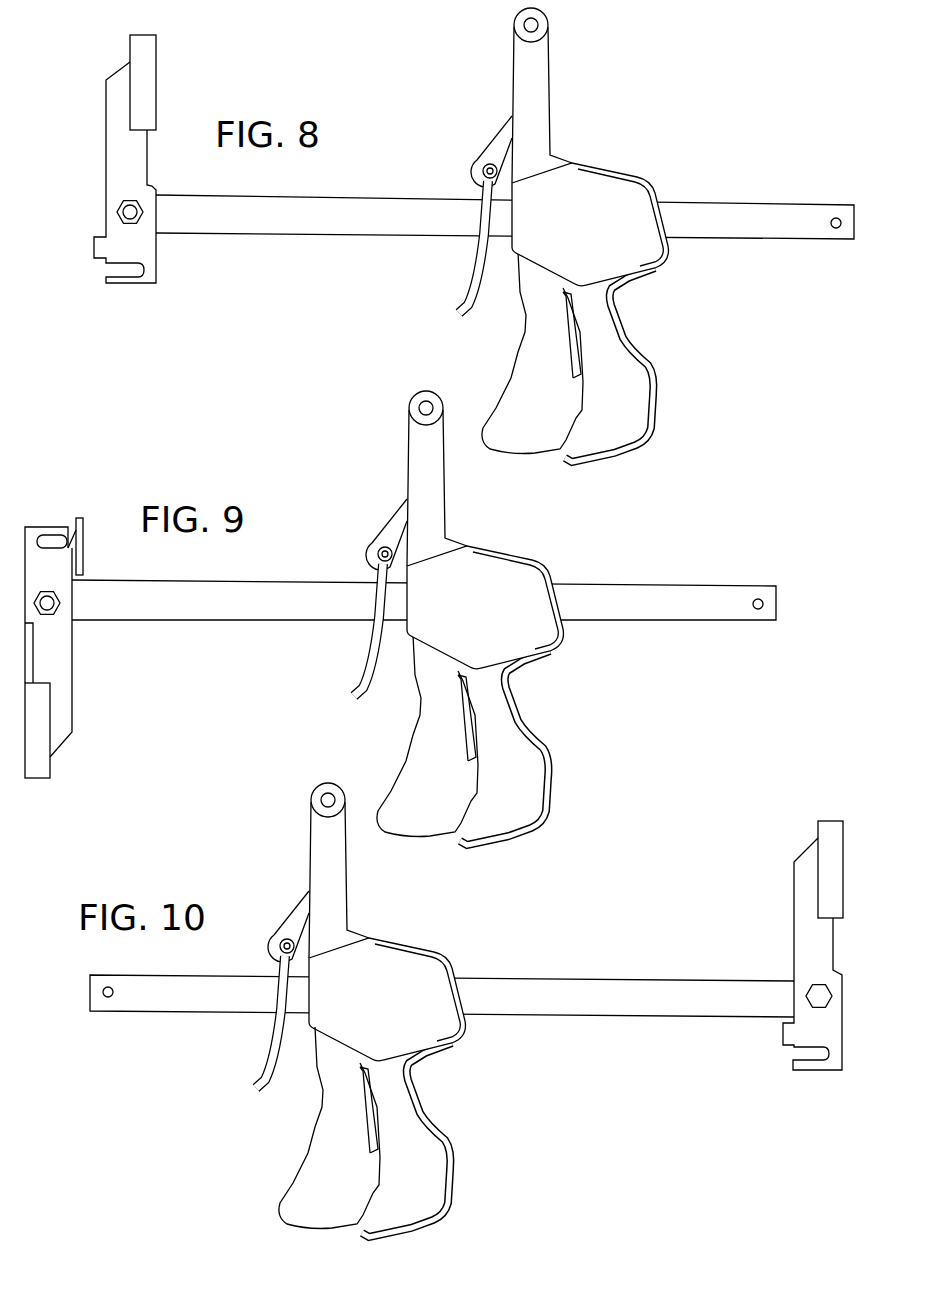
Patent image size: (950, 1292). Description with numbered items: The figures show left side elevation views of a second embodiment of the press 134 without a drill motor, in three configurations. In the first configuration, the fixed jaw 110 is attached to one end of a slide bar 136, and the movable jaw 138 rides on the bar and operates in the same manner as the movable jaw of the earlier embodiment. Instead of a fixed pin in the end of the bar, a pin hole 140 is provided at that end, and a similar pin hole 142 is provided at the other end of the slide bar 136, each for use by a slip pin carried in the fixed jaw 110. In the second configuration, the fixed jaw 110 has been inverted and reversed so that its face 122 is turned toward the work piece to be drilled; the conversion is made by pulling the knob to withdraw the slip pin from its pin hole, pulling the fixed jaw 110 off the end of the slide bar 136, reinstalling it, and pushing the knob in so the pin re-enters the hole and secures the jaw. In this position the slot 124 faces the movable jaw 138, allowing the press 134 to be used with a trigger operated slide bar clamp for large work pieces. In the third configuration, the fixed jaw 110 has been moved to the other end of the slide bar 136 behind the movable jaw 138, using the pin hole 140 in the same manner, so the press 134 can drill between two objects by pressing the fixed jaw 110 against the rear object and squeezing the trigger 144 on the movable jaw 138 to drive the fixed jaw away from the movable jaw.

In FIG. 8, the fixed jaw 110 is at (152, 78).
In FIG. 9, the fixed jaw 110 is at (65, 712).
In FIG. 10, the fixed jaw 110 is at (794, 900).
In FIG. 9, the face 122 is at (25, 778).
In FIG. 9, the slot 124 is at (50, 537).
In FIG. 8, the press 134 is at (748, 35).
In FIG. 9, the press 134 is at (748, 490).
In FIG. 10, the press 134 is at (657, 1222).
In FIG. 8, the slide bar 136 is at (341, 237).
In FIG. 9, the slide bar 136 is at (298, 621).
In FIG. 10, the slide bar 136 is at (668, 1018).
In FIG. 8, the movable jaw 138 is at (537, 132).
In FIG. 9, the movable jaw 138 is at (405, 462).
In FIG. 10, the movable jaw 138 is at (325, 878).
In FIG. 8, the pin hole 140 is at (840, 231).
In FIG. 9, the pin hole 140 is at (760, 611).
In FIG. 10, the pin hole 142 is at (105, 998).
In FIG. 10, the trigger 144 is at (300, 1176).